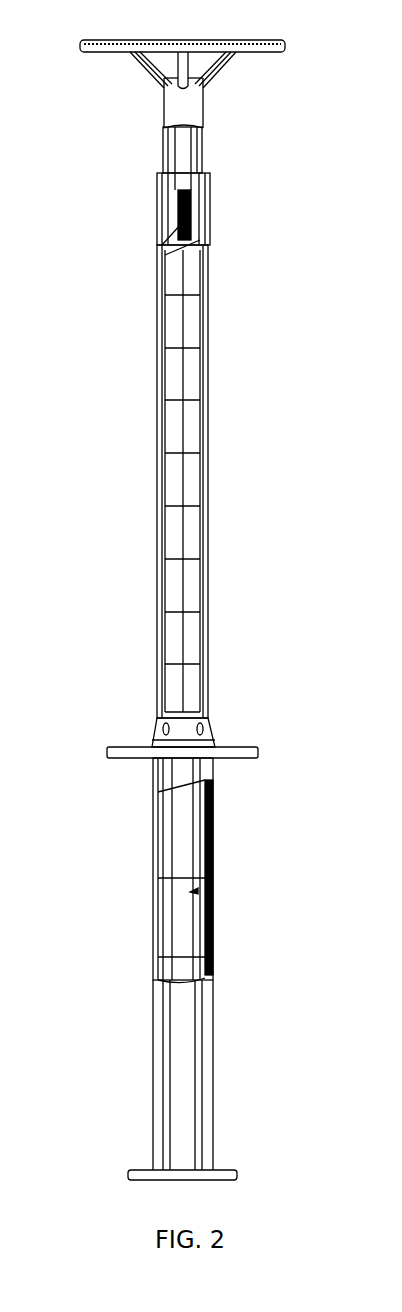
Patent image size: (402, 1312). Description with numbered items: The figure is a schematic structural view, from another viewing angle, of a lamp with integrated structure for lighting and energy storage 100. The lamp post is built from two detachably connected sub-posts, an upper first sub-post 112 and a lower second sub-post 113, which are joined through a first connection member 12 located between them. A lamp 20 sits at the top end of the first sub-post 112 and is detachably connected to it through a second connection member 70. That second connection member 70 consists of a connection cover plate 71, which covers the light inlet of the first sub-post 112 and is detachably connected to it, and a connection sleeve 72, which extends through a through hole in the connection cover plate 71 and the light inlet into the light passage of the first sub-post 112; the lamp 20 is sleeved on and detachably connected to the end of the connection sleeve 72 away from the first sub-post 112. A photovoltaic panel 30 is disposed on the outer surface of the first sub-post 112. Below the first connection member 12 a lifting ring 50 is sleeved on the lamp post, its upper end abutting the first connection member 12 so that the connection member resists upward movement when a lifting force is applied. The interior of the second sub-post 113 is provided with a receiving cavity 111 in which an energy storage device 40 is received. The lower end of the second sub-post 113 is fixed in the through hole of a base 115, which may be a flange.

The lamp with integrated structure for lighting and energy storage 100 is at (64, 28).
The lamp 20 is at (185, 102).
The second connection member 70 is at (244, 186).
The connection sleeve 72 is at (204, 146).
The connection cover plate 71 is at (212, 178).
The first sub-post 112 is at (147, 268).
The photovoltaic panel 30 is at (186, 327).
The first connection member 12 is at (205, 730).
The lifting ring 50 is at (248, 753).
The second sub-post 113 is at (132, 1046).
The energy storage device 40 is at (226, 870).
The receiving cavity 111 is at (184, 915).
The base 115 is at (236, 1175).